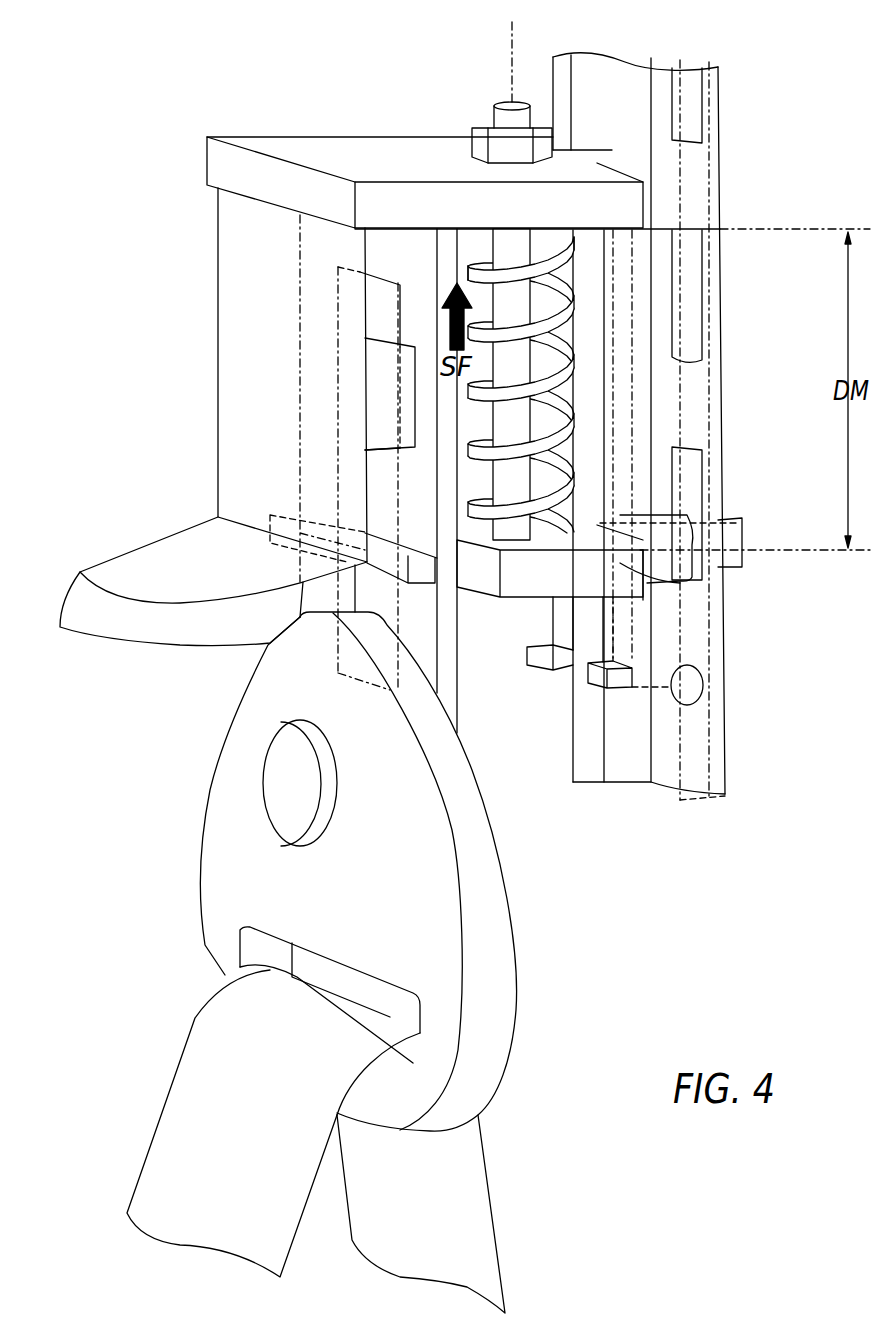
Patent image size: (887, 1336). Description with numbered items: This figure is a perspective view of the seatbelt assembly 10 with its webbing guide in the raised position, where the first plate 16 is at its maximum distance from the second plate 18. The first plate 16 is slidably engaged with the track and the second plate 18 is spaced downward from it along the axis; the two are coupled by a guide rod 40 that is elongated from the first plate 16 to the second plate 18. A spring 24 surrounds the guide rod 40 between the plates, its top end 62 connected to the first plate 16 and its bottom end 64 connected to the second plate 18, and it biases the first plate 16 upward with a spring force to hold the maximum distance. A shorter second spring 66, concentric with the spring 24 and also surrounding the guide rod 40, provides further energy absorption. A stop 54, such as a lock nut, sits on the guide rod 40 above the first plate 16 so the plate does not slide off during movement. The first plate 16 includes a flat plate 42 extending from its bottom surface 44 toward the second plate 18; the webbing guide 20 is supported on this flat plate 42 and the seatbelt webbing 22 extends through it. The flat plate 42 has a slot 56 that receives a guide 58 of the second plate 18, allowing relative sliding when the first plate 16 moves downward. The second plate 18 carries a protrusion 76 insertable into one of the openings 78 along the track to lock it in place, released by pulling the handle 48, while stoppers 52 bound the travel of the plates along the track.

The assembly 10 is at (58, 141).
The first plate 16 is at (340, 158).
The second plate 18 is at (603, 582).
The webbing guide 20 is at (497, 977).
The seatbelt webbing 22 is at (450, 1205).
The spring 24 is at (599, 311).
The guide rod 40 is at (510, 257).
The flat plate 42 is at (447, 668).
The bottom surface 44 is at (477, 238).
The handle 48 is at (115, 572).
The stoppers 52 is at (552, 672).
The stop 54 is at (486, 127).
The slot 56 is at (385, 502).
The guide 58 is at (435, 577).
The top end 62 is at (553, 233).
The bottom end 64 is at (660, 582).
The second spring 66 is at (560, 358).
The protrusion 76 is at (745, 538).
The openings 78 is at (688, 140).